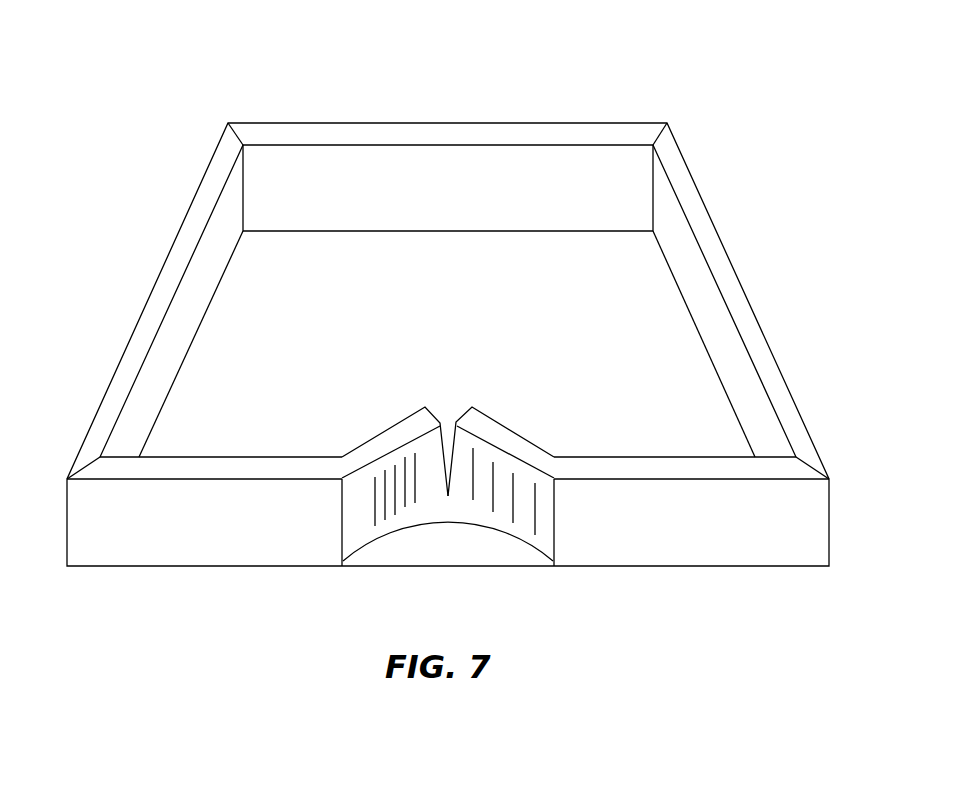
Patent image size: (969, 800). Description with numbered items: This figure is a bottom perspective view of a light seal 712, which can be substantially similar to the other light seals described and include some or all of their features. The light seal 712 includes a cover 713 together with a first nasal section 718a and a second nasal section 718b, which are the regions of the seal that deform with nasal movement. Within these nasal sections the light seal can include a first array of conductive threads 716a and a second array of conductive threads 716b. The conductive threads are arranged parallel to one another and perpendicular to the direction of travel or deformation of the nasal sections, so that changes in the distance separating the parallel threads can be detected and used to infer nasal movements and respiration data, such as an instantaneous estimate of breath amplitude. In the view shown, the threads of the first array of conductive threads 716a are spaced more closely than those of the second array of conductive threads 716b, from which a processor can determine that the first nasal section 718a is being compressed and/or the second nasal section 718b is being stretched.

The light seal 712 is at (578, 88).
The cover 713 is at (182, 533).
The first array of conductive threads 716a is at (375, 498).
The second array of conductive threads 716b is at (535, 507).
The first nasal section 718a is at (402, 430).
The second nasal section 718b is at (493, 430).